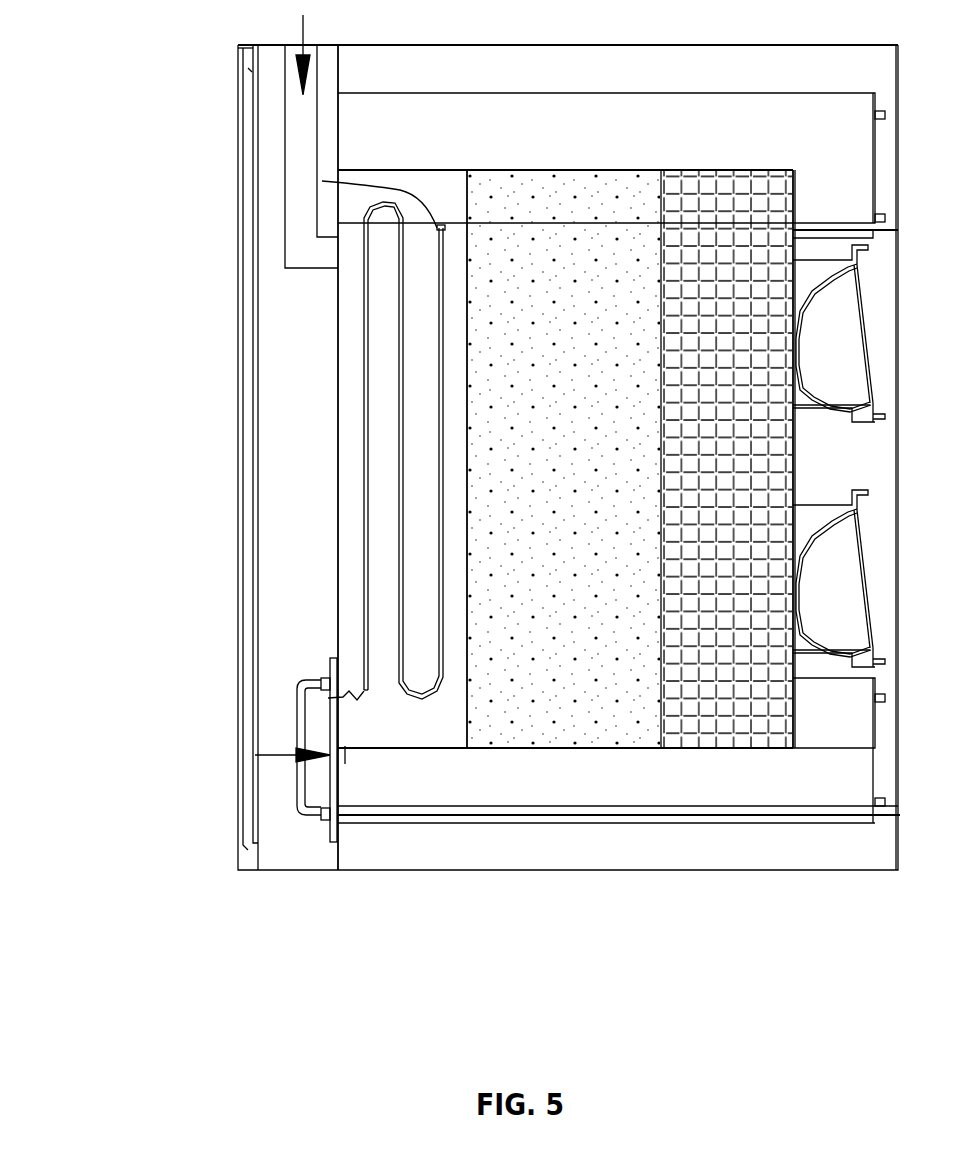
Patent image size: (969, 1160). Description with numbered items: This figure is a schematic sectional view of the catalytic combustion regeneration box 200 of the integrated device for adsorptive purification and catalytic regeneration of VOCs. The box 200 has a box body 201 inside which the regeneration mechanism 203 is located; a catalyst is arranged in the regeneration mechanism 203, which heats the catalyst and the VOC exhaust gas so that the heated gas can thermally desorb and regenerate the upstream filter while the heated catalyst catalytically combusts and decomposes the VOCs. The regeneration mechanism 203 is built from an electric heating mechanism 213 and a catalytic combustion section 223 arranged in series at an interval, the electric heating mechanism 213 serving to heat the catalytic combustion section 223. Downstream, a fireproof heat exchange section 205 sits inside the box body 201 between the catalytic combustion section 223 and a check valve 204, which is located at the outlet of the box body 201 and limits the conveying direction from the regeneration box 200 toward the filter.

The catalytic combustion regeneration box 200 is at (466, 939).
The box body 201 is at (397, 44).
The regeneration mechanism 203 is at (115, 122).
The electric heating mechanism 213 is at (383, 202).
The catalytic combustion section 223 is at (490, 300).
The fireproof heat exchange section 205 is at (665, 453).
The check valve 204 is at (800, 588).